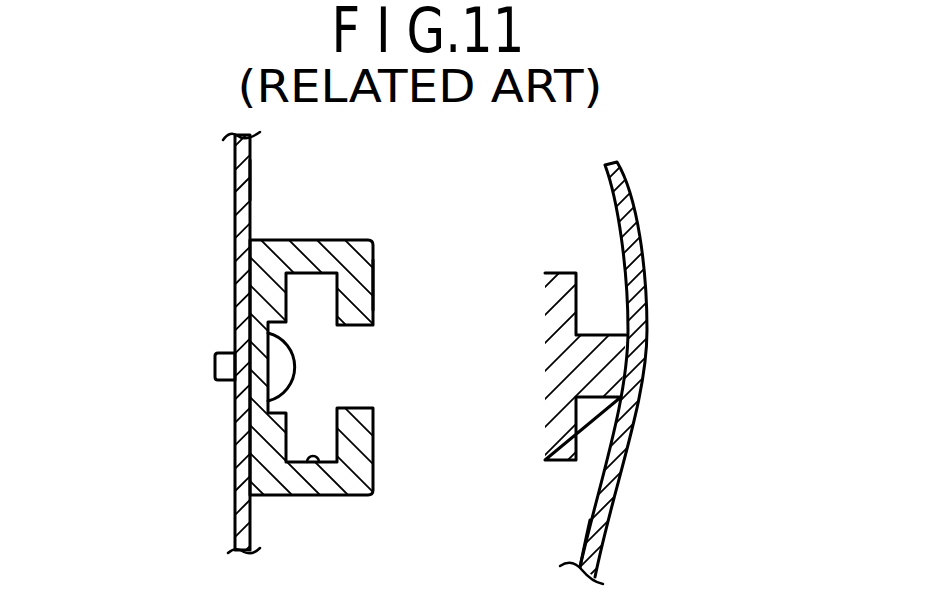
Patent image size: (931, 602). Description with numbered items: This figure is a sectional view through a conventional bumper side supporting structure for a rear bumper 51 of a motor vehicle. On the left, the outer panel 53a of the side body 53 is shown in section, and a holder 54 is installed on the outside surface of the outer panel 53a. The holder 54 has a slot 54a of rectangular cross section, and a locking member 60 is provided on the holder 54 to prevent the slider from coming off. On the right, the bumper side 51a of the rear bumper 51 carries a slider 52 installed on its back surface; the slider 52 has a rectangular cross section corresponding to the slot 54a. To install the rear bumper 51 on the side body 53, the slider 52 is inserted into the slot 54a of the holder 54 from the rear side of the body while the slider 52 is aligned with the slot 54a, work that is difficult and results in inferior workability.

The rear bumper 51 is at (645, 210).
The bumper side 51a is at (587, 540).
The slider 52 is at (545, 281).
The side body 53 is at (233, 528).
The outer panel 53a is at (250, 175).
The holder 54 is at (360, 240).
The slot 54a is at (313, 468).
The locking member 60 is at (373, 285).